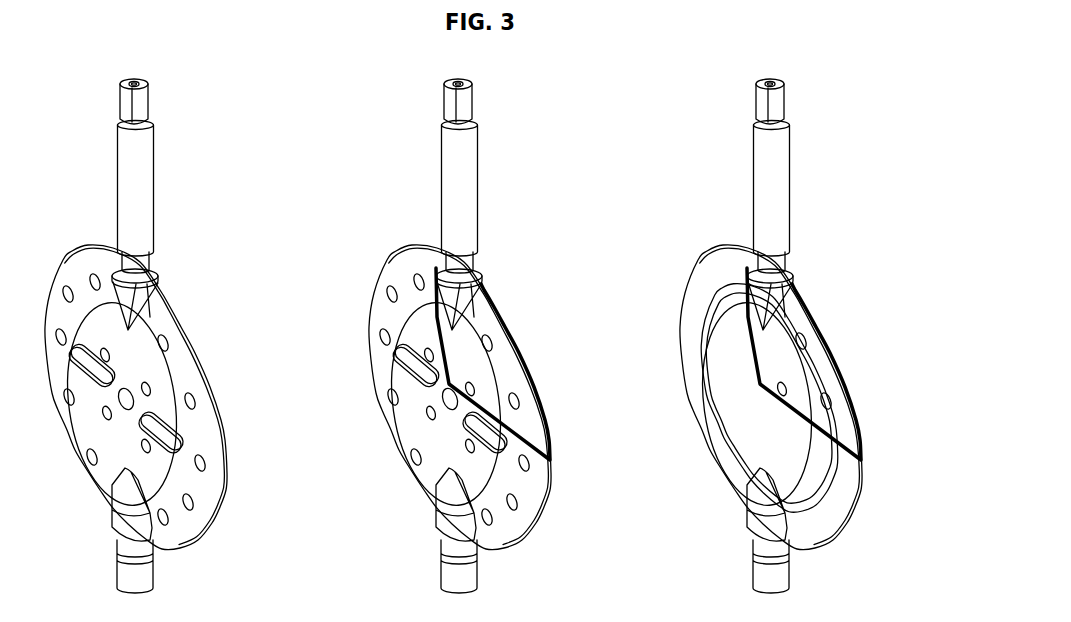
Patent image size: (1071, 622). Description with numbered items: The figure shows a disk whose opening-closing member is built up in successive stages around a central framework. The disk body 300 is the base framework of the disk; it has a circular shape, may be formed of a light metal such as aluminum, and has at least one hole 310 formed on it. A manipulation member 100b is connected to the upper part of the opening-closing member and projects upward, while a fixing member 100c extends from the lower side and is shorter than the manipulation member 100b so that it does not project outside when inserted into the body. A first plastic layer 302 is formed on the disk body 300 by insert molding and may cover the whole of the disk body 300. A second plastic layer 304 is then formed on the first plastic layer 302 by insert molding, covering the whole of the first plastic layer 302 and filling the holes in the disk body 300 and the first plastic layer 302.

The manipulation member 100b is at (147, 177).
The fixing member 100c is at (150, 575).
The disk body 300 is at (168, 327).
The first plastic layer 302 is at (527, 490).
The second plastic layer 304 is at (828, 513).
The hole 310 is at (205, 397).